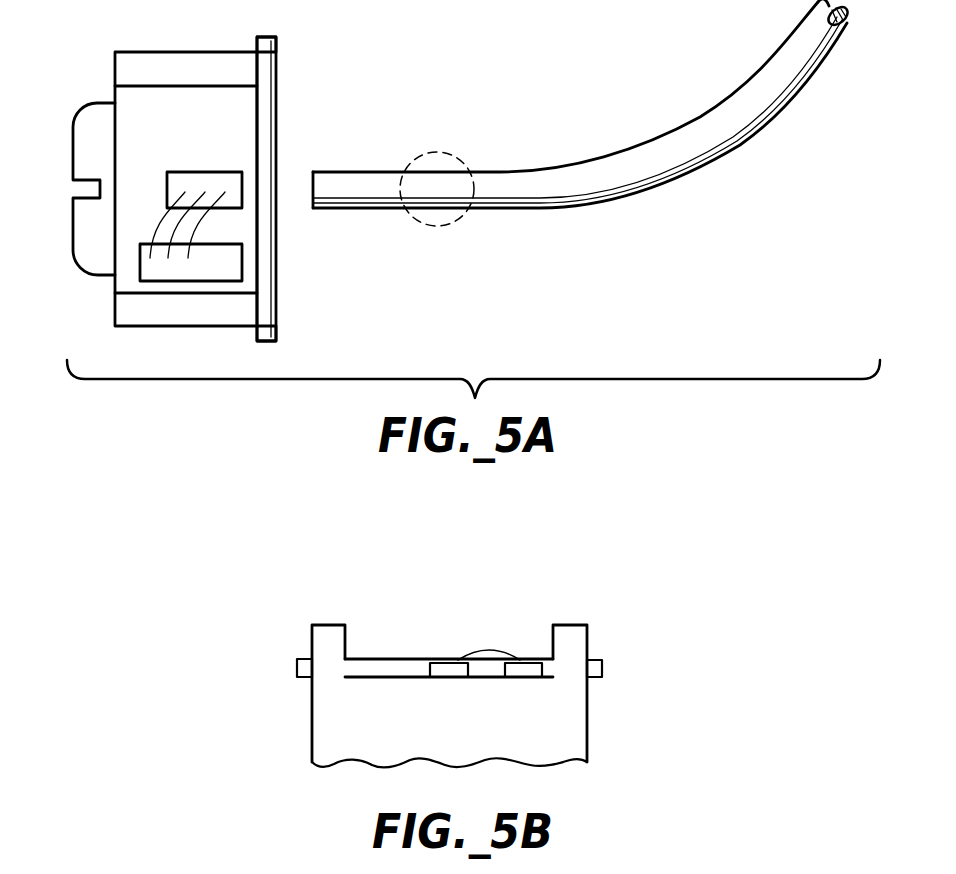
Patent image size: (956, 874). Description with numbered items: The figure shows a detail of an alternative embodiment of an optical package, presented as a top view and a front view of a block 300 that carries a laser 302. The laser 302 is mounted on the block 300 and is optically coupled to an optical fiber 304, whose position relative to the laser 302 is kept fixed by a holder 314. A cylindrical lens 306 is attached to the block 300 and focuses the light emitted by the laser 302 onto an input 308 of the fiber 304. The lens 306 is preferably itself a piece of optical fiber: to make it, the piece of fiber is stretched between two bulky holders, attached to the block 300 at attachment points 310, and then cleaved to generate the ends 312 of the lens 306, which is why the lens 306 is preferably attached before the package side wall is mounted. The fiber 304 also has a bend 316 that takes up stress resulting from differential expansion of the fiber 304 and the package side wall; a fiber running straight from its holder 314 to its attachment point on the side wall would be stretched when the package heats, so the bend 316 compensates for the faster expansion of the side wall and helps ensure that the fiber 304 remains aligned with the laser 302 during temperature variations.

In FIG. 5A, the block 300 is at (333, 288).
In FIG. 5B, the block 300 is at (300, 710).
In FIG. 5A, the laser 302 is at (200, 172).
In FIG. 5B, the laser 302 is at (447, 663).
In FIG. 5A, the optical fiber 304 is at (324, 172).
In FIG. 5A, the cylindrical lens 306 is at (276, 95).
In FIG. 5B, the cylindrical lens 306 is at (378, 659).
In FIG. 5A, the input 308 is at (313, 190).
In FIG. 5A, the attachment points 310 is at (257, 62).
In FIG. 5A, the ends 312 is at (276, 40).
In FIG. 5B, the ends 312 is at (297, 668).
In FIG. 5A, the holder 314 is at (437, 152).
In FIG. 5A, the bend 316 is at (620, 157).